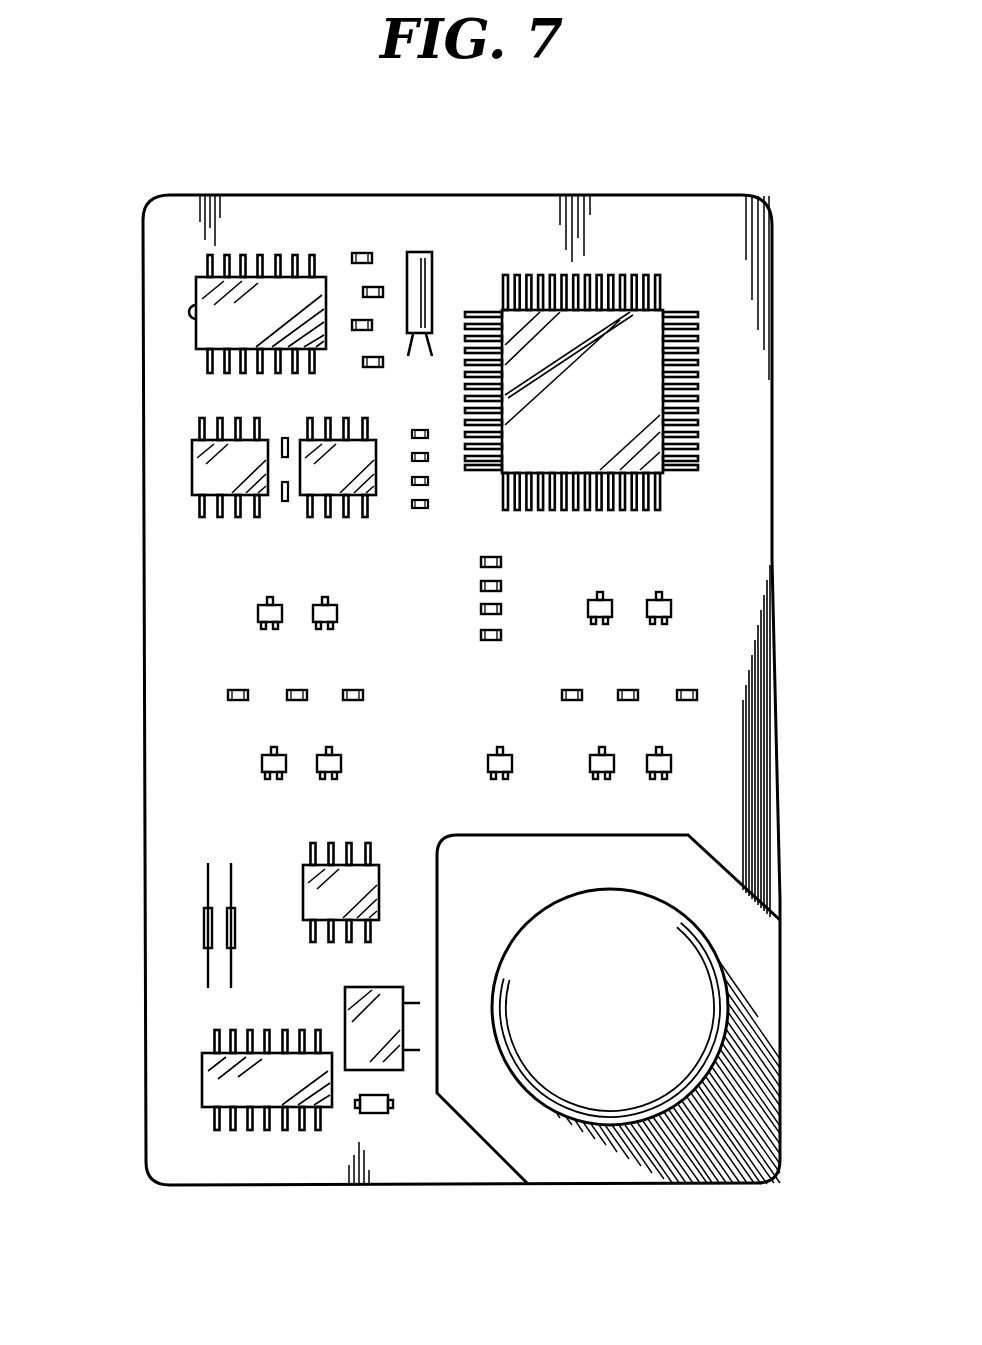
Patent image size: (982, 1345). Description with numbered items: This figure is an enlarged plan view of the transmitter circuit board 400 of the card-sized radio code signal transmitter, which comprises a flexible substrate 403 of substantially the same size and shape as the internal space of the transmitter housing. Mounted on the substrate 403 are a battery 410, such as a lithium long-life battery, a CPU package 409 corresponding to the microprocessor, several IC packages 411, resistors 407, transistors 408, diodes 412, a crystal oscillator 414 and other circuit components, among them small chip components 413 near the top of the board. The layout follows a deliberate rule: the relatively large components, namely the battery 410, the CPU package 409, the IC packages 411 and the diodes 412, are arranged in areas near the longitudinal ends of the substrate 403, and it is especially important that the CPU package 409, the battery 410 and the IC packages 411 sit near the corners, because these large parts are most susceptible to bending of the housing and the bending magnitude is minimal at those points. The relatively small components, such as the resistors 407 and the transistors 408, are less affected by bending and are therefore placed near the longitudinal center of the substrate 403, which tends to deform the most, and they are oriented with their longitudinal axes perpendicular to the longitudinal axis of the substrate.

The transmitter circuit board 400 is at (662, 192).
The flexible substrate 403 is at (728, 358).
The resistors 407 is at (228, 695).
The transistors 408 is at (262, 763).
The CPU package 409 is at (643, 322).
The battery 410 is at (706, 1033).
The IC packages 411 is at (200, 462).
The diodes 412 is at (231, 935).
The chip resistors 413 is at (357, 252).
The crystal oscillator 414 is at (419, 252).